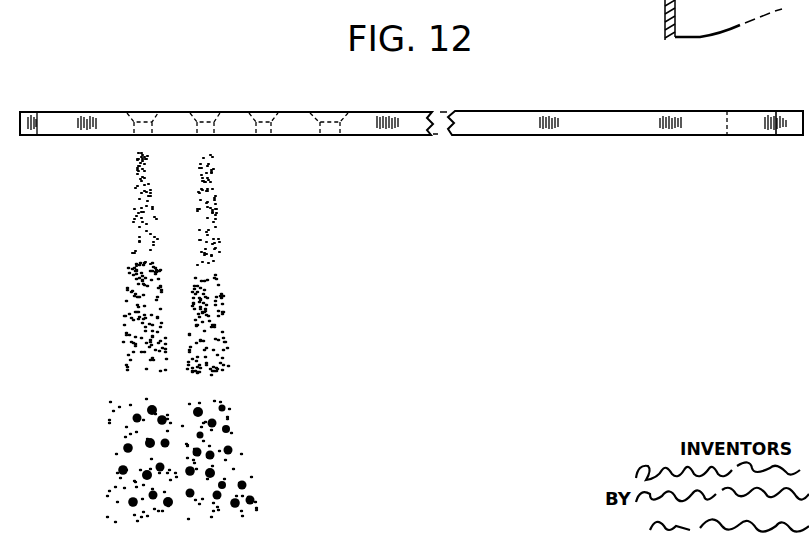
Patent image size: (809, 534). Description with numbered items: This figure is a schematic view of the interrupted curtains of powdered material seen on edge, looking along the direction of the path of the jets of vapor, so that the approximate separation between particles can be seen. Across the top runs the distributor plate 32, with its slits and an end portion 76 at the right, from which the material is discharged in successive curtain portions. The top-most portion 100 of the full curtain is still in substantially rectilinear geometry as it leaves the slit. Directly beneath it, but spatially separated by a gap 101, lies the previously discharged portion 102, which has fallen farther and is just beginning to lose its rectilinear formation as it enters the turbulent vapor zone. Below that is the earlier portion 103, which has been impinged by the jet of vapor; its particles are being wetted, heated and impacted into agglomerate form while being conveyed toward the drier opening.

The strip 32 is at (493, 107).
The end portion of strip 76 is at (750, 111).
The top-most portion of the full curtain 100 is at (218, 214).
The spatial separation 101 is at (213, 267).
The previously discharged portion of the interrupted curtain 102 is at (222, 337).
The previously discharged curtain portion impinged by vapor jet 103 is at (238, 453).